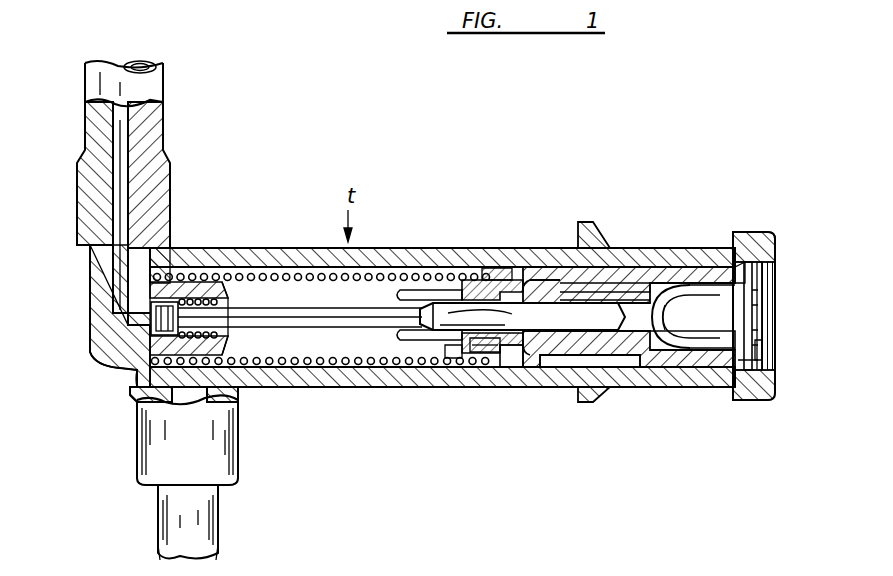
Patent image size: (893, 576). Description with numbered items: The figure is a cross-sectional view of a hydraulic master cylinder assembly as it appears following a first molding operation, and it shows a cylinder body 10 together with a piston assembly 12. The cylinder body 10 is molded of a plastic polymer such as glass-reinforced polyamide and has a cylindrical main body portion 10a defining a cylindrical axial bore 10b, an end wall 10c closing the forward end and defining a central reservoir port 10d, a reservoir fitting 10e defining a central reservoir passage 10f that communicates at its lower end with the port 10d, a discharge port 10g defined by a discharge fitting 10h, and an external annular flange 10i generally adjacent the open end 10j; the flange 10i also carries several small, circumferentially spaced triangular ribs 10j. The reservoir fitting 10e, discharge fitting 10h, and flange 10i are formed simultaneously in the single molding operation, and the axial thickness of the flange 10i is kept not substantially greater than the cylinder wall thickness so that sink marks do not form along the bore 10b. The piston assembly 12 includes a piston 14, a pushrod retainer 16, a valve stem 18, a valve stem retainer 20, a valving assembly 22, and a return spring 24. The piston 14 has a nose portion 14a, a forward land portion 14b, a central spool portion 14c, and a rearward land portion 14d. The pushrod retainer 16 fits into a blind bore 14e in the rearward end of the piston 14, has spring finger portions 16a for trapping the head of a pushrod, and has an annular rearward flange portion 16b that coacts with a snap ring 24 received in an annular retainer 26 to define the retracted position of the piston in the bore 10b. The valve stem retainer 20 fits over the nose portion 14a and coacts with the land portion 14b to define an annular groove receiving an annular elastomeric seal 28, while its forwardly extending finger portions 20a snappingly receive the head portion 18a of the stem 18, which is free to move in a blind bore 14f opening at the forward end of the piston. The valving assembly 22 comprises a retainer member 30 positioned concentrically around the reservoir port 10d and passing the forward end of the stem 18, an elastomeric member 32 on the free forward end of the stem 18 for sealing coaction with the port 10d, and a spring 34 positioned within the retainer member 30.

The cylinder body 10 is at (373, 242).
The cylindrical main body portion 10a is at (405, 257).
The cylindrical axial bore 10b is at (312, 285).
The end wall 10c is at (135, 365).
The central reservoir port 10d is at (150, 318).
The reservoir fitting 10e is at (92, 186).
The central reservoir passage 10f is at (120, 264).
The discharge port 10g is at (180, 404).
The discharge fitting 10h is at (215, 440).
The external annular flange 10i is at (590, 224).
The open end / triangular ribs 10j is at (592, 400).
The piston assembly 12 is at (650, 290).
The piston 14 is at (565, 290).
The nose portion 14a is at (520, 280).
The forward land portion 14b is at (528, 367).
The central spool portion 14c is at (612, 288).
The rearward land portion 14d is at (723, 244).
The blind bore 14e is at (675, 387).
The blind bore 14f is at (560, 368).
The pushrod retainer 16 is at (700, 300).
The spring finger portions 16a is at (700, 318).
The annular rearward flange portion 16b is at (748, 343).
The valve stem 18 is at (336, 328).
The head portion 18a is at (522, 316).
The valve stem retainer 20 is at (432, 280).
The finger portions 20a is at (428, 342).
The valving assembly 22 is at (200, 298).
The return spring / snap ring 24 is at (449, 360).
The annular retainer 26 is at (752, 268).
The annular elastomeric seal 28 is at (488, 355).
The retainer member 30 is at (180, 283).
The elastomeric member 32 is at (130, 375).
The spring 34 is at (238, 250).